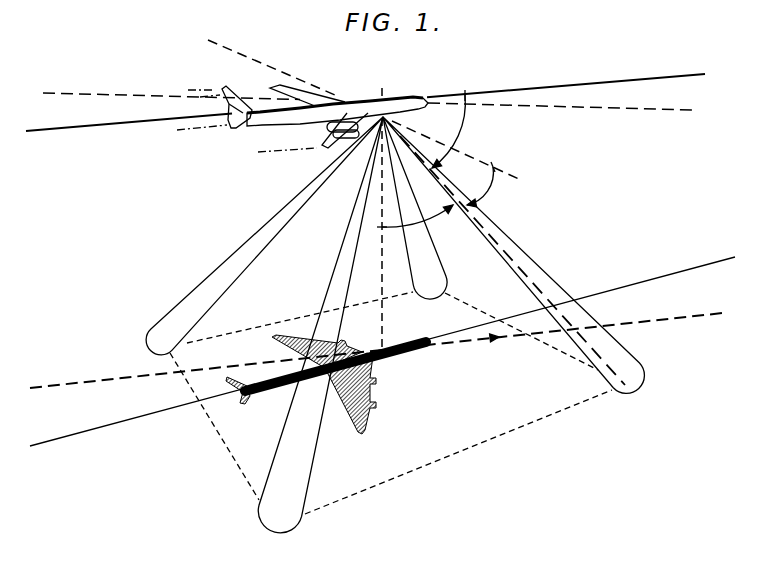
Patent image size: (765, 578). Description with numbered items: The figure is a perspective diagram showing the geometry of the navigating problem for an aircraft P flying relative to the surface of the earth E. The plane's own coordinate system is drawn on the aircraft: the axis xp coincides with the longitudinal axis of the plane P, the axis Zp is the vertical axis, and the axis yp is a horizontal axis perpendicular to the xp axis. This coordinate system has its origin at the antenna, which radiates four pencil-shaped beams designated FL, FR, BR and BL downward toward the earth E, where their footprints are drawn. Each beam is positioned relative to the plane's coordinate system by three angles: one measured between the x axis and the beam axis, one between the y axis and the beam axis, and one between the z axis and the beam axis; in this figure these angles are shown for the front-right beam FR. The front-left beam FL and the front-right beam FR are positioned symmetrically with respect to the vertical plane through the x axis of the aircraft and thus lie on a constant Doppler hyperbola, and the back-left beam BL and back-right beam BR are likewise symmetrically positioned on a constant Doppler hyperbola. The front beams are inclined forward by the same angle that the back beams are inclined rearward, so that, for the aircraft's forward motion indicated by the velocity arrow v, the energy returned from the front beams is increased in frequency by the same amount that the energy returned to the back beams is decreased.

The aircraft P is at (360, 102).
The surface of the earth E is at (452, 418).
The longitudinal axis xp is at (365, 105).
The horizontal axis yp is at (367, 111).
The vertical axis Zp is at (374, 212).
The back-left beam BL is at (248, 236).
The back-right beam BR is at (320, 334).
The front-left beam FL is at (429, 208).
The front-right beam FR is at (516, 268).
The aircraft ground velocity vector v is at (376, 350).